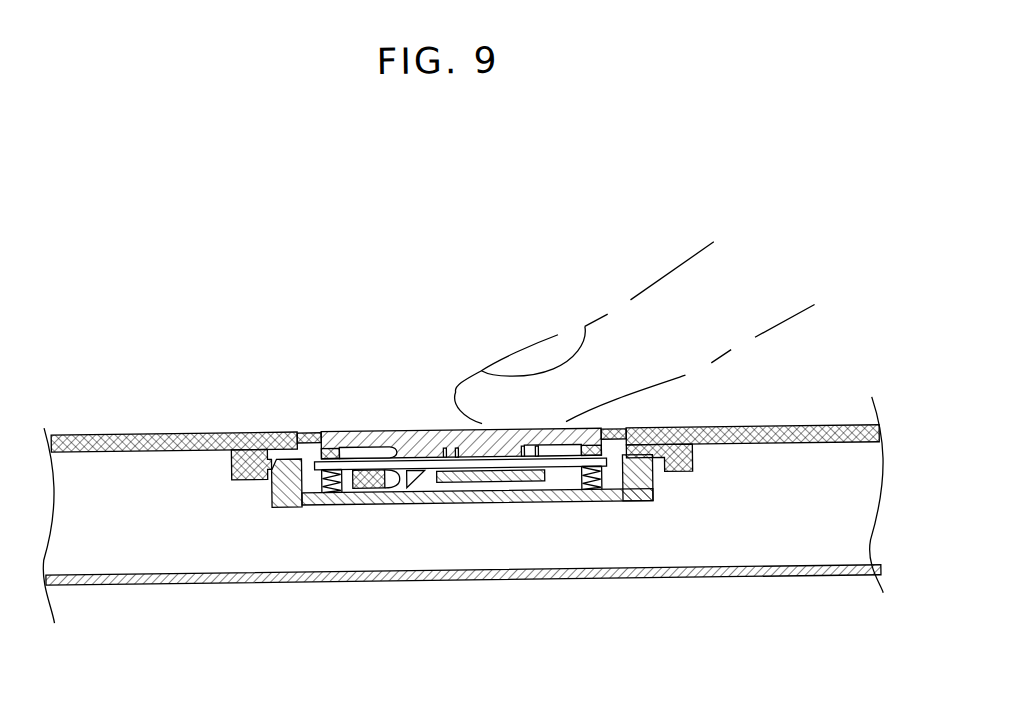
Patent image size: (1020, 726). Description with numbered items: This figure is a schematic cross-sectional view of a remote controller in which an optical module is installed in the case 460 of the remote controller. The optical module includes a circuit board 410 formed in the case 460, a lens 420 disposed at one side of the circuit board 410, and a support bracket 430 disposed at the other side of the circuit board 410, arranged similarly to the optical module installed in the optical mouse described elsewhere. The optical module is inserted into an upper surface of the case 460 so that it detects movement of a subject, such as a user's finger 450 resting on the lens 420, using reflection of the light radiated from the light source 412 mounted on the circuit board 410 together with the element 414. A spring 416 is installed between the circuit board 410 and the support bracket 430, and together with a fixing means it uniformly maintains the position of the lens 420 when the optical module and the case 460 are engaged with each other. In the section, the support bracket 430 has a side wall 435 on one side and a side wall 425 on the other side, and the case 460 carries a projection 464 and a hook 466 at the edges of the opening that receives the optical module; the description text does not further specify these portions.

The circuit board 410 is at (567, 468).
The light source 412 is at (393, 487).
The circuit board layer 414 is at (472, 482).
The spring 416 is at (318, 491).
The lens 420 is at (353, 430).
The housing side wall 425 is at (655, 493).
The support bracket 430 is at (275, 430).
The housing side wall 435 is at (267, 478).
The finger 450 is at (630, 320).
The case 460 is at (188, 430).
The case projection 464 is at (237, 478).
The case hook 466 is at (617, 466).